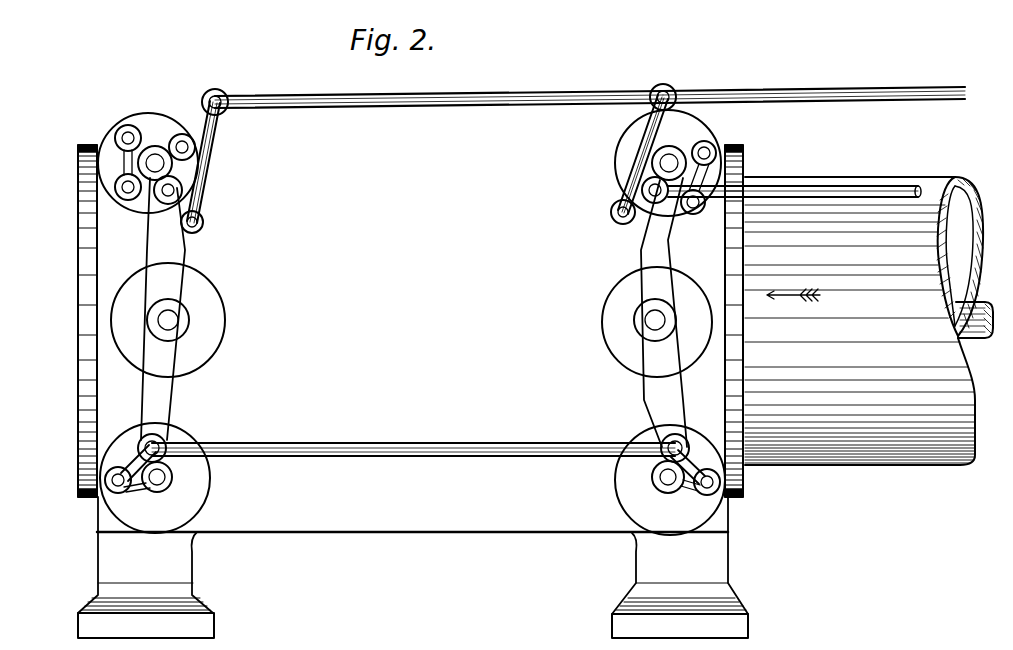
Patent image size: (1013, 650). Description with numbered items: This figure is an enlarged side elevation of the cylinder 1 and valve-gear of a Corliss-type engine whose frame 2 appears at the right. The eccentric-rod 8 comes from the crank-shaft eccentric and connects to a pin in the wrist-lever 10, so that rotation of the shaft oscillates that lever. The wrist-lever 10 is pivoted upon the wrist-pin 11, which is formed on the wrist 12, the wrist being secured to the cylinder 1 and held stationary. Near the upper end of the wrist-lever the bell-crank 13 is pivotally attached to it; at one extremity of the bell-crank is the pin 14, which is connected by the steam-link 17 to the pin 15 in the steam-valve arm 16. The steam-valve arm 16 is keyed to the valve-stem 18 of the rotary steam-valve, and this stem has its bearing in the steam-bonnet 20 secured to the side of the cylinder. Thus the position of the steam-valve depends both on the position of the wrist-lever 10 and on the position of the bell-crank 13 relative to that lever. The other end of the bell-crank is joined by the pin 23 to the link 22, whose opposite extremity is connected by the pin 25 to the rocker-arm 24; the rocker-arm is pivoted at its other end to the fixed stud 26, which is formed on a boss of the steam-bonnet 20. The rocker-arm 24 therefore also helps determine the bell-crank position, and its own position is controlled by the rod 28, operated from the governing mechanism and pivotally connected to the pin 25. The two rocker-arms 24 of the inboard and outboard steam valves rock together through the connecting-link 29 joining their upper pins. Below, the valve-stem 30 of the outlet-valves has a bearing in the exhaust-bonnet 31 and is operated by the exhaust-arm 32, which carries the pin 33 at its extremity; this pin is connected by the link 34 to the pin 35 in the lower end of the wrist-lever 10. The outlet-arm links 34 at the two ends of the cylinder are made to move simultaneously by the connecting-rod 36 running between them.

The cylinder 1 is at (421, 377).
The frame 2 is at (869, 321).
The eccentric-rod 8 is at (877, 188).
The wrist-lever 10 is at (168, 392).
The wrist-pin 11 is at (171, 318).
The wrist 12 is at (213, 325).
The bell-crank 13 is at (158, 200).
The pin 14 is at (118, 190).
The pin 15 is at (120, 131).
The steam-valve arm 16 is at (156, 150).
The steam-link 17 is at (90, 145).
The valve-stem 18 is at (158, 164).
The steam-bonnet 20 is at (143, 113).
The link 22 is at (427, 139).
The pin 23 is at (203, 223).
The rocker-arm 24 is at (193, 118).
The pin 25 is at (223, 97).
The fixed stud 26 is at (196, 146).
The rod 28 is at (760, 93).
The connecting-link 29 is at (330, 96).
The valve-stem 30 is at (159, 478).
The exhaust-bonnet 31 is at (203, 473).
The exhaust-arm 32 is at (135, 488).
The pin 33 is at (118, 482).
The link 34 is at (132, 462).
The pin 35 is at (158, 448).
The connecting-rod 36 is at (365, 443).